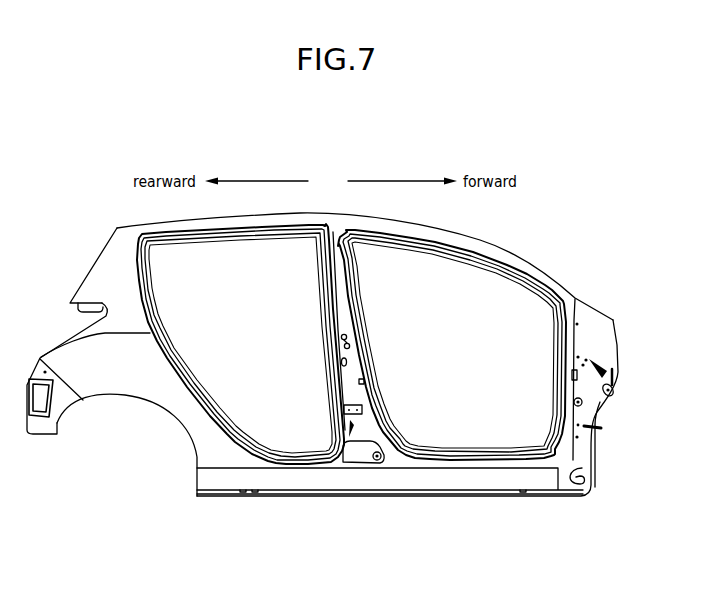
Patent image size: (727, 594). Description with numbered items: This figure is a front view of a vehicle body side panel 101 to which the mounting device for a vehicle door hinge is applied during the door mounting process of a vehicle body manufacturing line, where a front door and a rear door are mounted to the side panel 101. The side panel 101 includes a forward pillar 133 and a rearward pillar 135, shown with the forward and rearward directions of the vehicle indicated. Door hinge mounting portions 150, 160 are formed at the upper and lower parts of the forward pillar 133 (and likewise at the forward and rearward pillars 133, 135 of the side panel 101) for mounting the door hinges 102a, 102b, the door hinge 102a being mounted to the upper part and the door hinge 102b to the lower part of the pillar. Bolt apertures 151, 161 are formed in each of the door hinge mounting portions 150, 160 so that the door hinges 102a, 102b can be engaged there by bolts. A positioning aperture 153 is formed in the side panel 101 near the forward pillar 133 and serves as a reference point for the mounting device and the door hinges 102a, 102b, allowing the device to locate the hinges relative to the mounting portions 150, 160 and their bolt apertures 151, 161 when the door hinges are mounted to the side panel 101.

The side panel 101 is at (363, 478).
The door hinge 102a is at (357, 339).
The door hinge 102b is at (350, 430).
The forward pillar 133 is at (582, 337).
The rearward pillar 135 is at (339, 288).
The door hinge mounting portion 150 is at (614, 381).
The bolt aperture 151 is at (587, 360).
The positioning aperture 153 is at (583, 365).
The door hinge mounting portion 160 is at (601, 428).
The bolt aperture 161 is at (578, 438).